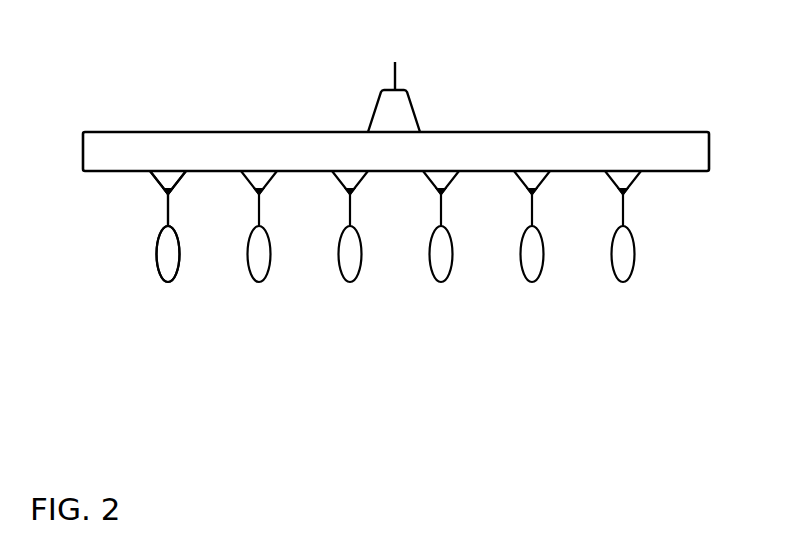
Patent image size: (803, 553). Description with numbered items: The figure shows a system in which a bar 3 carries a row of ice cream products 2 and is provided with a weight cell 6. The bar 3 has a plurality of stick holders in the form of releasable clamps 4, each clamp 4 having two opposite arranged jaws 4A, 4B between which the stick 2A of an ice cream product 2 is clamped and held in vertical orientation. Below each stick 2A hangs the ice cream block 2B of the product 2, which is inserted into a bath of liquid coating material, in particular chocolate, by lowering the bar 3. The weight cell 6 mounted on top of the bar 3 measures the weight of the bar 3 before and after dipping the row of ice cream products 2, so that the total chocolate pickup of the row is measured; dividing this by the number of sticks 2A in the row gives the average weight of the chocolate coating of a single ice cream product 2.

The ice cream product 2 is at (177, 290).
The stick 2A is at (174, 223).
The ice cream block 2B is at (168, 260).
The bar 3 is at (258, 147).
The clamp 4 is at (168, 184).
The jaw 4A is at (153, 188).
The jaw 4B is at (178, 187).
The weight cell 6 is at (420, 87).